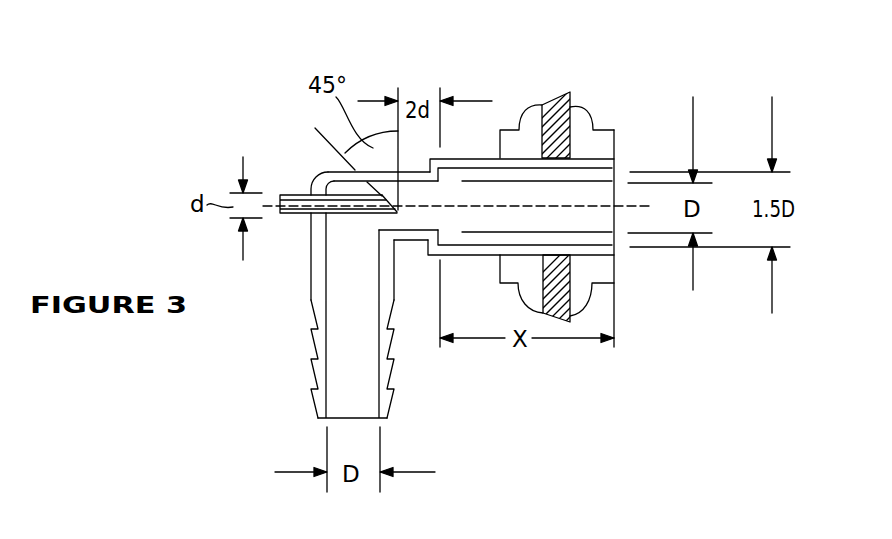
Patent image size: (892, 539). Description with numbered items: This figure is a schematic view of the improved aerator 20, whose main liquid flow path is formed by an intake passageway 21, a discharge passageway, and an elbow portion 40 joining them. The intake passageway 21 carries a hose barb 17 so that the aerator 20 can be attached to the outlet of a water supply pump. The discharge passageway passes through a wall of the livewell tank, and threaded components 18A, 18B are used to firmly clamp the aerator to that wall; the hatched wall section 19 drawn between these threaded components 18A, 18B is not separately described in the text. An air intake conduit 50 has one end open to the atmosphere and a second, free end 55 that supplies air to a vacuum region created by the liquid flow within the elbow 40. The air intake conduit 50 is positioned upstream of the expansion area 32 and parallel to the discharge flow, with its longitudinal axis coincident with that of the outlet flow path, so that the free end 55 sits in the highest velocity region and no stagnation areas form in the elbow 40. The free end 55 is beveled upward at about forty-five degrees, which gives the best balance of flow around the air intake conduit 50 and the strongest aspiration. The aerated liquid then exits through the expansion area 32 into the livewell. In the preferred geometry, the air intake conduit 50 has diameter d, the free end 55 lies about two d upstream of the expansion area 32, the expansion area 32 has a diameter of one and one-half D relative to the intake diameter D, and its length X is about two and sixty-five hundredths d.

The hose barb 17 is at (388, 392).
The threaded component 18A is at (524, 140).
The threaded component 18B is at (599, 140).
The bulkhead wall 19 is at (557, 99).
The aerator 20 is at (251, 138).
The intake passageway 21 is at (337, 362).
The expansion area 32 is at (604, 176).
The elbow portion 40 is at (327, 173).
The air intake conduit 50 is at (345, 202).
The free end 55 is at (397, 203).